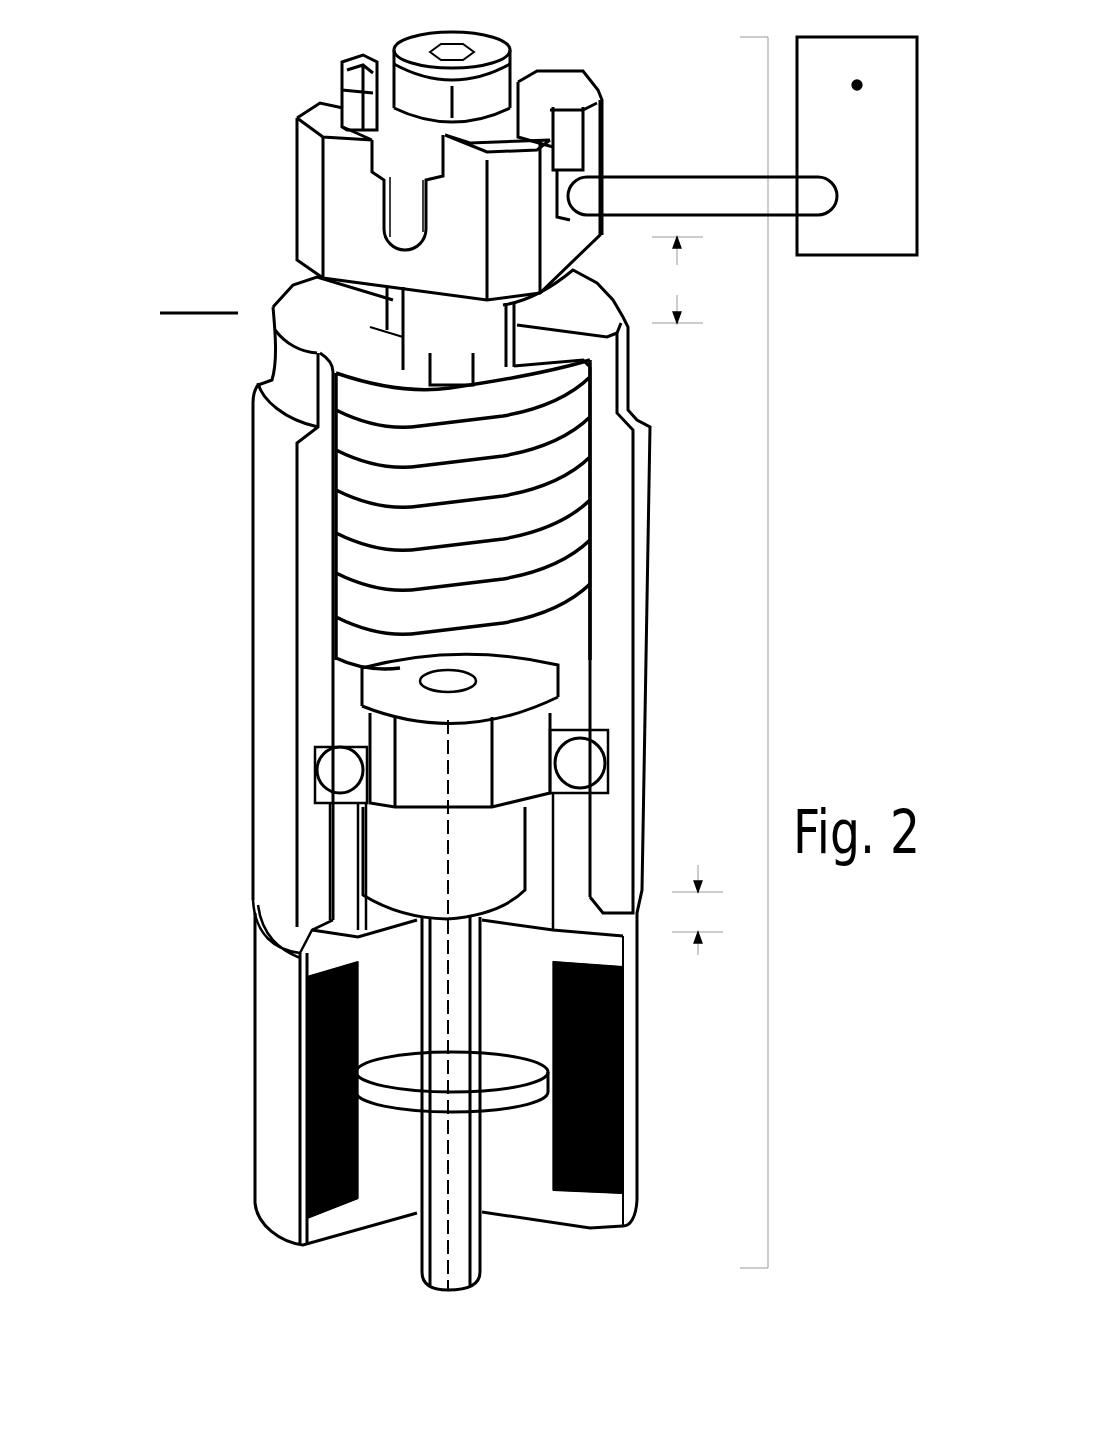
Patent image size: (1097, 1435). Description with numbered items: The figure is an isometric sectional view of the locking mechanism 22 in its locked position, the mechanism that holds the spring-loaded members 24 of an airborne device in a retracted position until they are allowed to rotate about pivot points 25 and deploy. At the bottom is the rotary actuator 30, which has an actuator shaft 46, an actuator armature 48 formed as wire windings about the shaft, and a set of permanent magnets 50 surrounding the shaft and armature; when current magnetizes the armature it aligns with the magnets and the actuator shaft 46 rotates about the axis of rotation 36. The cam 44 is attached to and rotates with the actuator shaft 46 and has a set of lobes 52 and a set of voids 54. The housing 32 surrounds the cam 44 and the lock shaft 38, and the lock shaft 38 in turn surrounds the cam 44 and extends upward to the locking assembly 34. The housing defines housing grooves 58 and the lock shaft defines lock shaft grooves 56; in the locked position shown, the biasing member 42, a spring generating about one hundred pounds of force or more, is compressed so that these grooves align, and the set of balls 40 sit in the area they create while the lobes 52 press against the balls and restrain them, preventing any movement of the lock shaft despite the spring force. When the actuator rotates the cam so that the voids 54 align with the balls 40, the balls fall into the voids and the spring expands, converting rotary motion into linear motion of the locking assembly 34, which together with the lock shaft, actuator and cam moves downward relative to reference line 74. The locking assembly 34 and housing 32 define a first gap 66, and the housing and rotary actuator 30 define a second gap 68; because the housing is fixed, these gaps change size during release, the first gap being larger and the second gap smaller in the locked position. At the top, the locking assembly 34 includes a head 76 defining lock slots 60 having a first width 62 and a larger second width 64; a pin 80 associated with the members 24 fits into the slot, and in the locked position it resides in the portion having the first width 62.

The locking mechanism 22 is at (768, 593).
The members 24 is at (871, 170).
The pivot points 25 is at (855, 81).
The rotary actuator 30 is at (384, 978).
The housing 32 is at (258, 486).
The locking assembly 34 is at (486, 92).
The axis of rotation 36 is at (447, 1253).
The lock shaft 38 is at (418, 326).
The set of balls 40 is at (337, 761).
The biasing member 42 is at (387, 575).
The cam 44 is at (527, 692).
The actuator shaft 46 is at (438, 1228).
The actuator armature 48 is at (500, 1070).
The set of permanent magnets 50 is at (623, 1082).
The set of lobes 52 is at (537, 748).
The set of voids 54 is at (441, 795).
The lock shaft grooves 56 is at (575, 792).
The housing grooves 58 is at (581, 793).
The lock slots 60 is at (577, 133).
The first width 62 is at (427, 217).
The second width 64 is at (437, 155).
The first gap 66 is at (677, 280).
The second gap 68 is at (697, 910).
The reference line 74 is at (212, 312).
The head 76 is at (338, 195).
The pins 80 is at (735, 176).